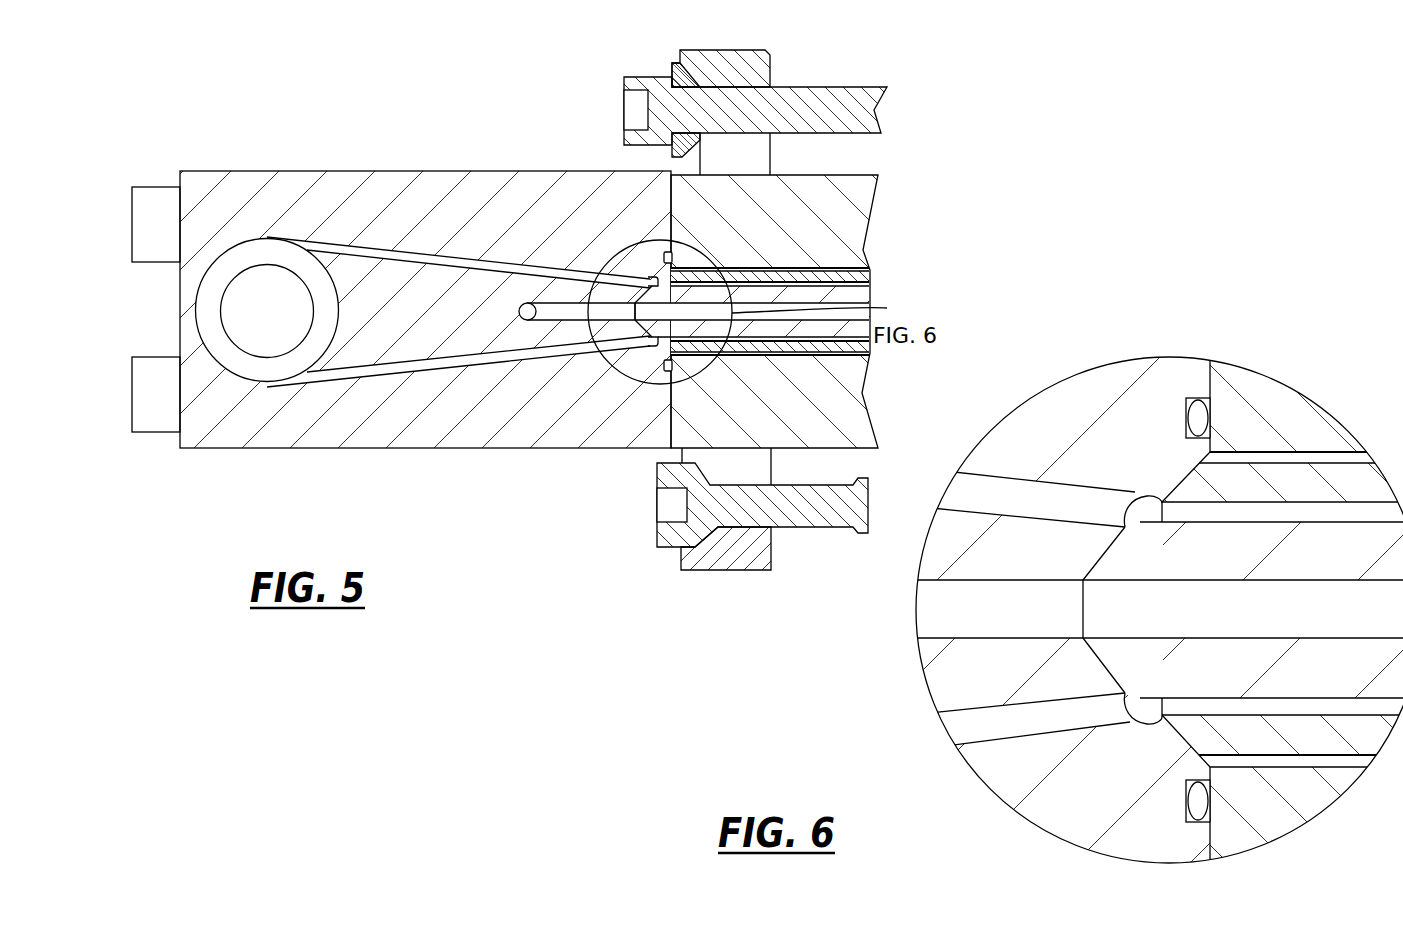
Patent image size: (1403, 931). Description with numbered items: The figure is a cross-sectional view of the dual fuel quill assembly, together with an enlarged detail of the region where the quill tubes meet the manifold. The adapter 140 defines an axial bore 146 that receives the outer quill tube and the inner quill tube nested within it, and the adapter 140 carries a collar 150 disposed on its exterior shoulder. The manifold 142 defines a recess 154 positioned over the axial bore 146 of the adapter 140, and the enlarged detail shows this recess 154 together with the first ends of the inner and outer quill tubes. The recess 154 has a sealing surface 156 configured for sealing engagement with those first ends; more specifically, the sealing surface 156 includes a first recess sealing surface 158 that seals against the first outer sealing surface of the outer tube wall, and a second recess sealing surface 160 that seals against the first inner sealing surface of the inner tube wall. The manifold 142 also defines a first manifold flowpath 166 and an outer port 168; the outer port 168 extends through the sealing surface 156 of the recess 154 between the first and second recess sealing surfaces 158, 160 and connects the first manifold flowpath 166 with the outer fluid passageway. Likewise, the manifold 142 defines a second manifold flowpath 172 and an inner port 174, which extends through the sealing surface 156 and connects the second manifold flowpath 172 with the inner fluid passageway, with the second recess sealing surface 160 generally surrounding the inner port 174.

In FIG. 5, the adapter 140 is at (837, 233).
In FIG. 6, the adapter 140 is at (1248, 397).
In FIG. 5, the manifold 142 is at (464, 226).
In FIG. 6, the manifold 142 is at (1042, 454).
In FIG. 5, the axial bore 146 is at (676, 268).
In FIG. 6, the axial bore 146 is at (1173, 518).
In FIG. 5, the collar 150 is at (740, 67).
In FIG. 5, the recess 154 is at (655, 277).
In FIG. 6, the recess 154 is at (1148, 496).
In FIG. 5, the sealing surface 156 is at (652, 347).
In FIG. 6, the sealing surface 156 is at (1163, 726).
In FIG. 5, the first recess sealing surface 158 is at (663, 255).
In FIG. 6, the first recess sealing surface 158 is at (1186, 489).
In FIG. 5, the second recess sealing surface 160 is at (647, 335).
In FIG. 6, the second recess sealing surface 160 is at (1087, 657).
In FIG. 5, the first manifold flowpath 166 is at (248, 260).
In FIG. 6, the first manifold flowpath 166 is at (968, 490).
In FIG. 5, the outer port 168 is at (648, 278).
In FIG. 6, the outer port 168 is at (1147, 498).
In FIG. 5, the second manifold flowpath 172 is at (543, 315).
In FIG. 6, the second manifold flowpath 172 is at (957, 607).
In FIG. 5, the inner port 174 is at (590, 304).
In FIG. 6, the inner port 174 is at (1082, 610).